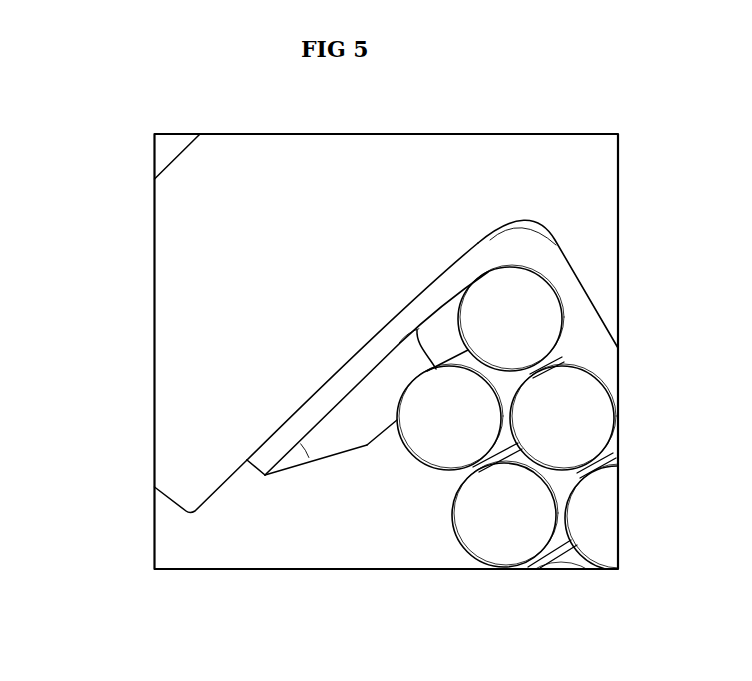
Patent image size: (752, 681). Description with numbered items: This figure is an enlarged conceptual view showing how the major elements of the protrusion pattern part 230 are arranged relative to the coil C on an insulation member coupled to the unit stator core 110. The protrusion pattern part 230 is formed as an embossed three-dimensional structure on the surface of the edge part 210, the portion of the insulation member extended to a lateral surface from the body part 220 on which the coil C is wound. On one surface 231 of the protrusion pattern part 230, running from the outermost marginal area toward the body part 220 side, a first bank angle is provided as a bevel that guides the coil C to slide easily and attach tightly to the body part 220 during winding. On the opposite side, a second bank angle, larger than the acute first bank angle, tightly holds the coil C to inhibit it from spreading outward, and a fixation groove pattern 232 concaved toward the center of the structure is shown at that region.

The unit stator core 110 is at (177, 328).
The edge part 210 is at (263, 457).
The body part 220 is at (575, 296).
The protrusion pattern part 230 is at (360, 427).
The one surface 231 is at (289, 468).
The fixation groove pattern 232 is at (422, 334).
The coil C is at (597, 418).